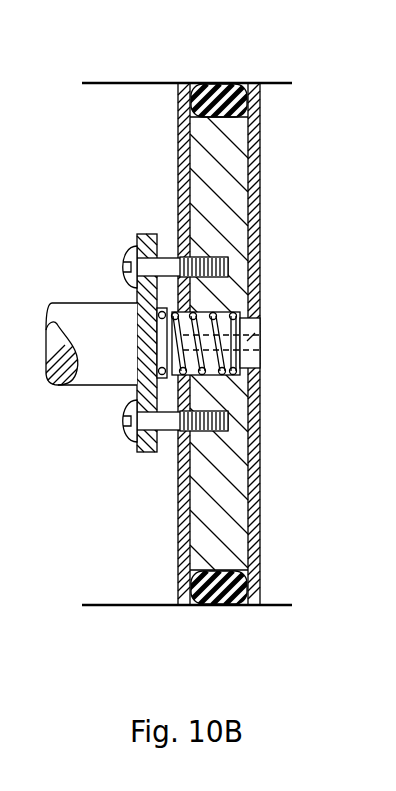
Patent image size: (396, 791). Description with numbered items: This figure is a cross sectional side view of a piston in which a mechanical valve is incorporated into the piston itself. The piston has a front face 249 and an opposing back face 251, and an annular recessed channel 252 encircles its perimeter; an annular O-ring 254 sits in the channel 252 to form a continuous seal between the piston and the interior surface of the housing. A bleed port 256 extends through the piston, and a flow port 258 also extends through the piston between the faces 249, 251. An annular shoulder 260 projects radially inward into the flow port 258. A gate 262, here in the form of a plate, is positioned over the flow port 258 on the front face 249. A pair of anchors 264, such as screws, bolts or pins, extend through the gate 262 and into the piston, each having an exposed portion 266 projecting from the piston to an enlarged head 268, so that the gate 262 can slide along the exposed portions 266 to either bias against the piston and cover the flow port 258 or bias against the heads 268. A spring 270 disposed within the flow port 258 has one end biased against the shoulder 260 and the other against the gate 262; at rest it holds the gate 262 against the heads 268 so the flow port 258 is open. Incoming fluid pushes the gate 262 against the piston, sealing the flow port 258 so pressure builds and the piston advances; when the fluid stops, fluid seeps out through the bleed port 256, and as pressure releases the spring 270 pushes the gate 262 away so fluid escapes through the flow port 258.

The front face 249 is at (178, 512).
The back face 251 is at (260, 515).
The annular recessed channel 252 is at (255, 116).
The annular O-ring 254 is at (215, 86).
The bleed port 256 is at (262, 328).
The flow port 258 is at (230, 312).
The annular shoulder 260 is at (250, 316).
The gate 262 is at (135, 318).
The anchors 264 is at (123, 435).
The exposed portion 266 is at (170, 262).
The enlarged head 268 is at (132, 250).
The spring 270 is at (210, 353).